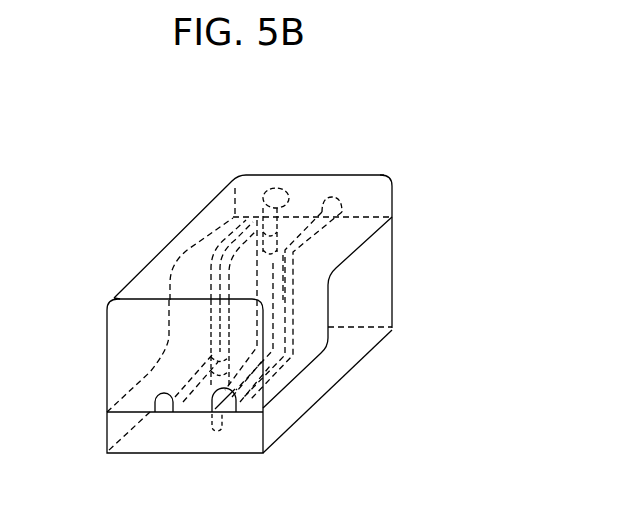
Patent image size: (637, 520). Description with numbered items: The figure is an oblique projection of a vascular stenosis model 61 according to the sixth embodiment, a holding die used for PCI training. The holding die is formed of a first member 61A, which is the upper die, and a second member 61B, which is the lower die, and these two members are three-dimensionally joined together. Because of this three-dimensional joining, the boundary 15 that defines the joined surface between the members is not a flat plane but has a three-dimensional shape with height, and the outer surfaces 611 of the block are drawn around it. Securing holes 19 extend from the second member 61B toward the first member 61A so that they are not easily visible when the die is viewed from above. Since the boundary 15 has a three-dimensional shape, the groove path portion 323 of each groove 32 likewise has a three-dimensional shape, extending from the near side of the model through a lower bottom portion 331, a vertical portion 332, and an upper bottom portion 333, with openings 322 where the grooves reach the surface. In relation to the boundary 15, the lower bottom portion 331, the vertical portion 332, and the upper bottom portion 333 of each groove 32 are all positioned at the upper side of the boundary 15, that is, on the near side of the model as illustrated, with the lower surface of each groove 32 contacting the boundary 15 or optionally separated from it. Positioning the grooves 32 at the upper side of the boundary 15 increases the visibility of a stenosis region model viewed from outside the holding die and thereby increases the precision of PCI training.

The boundary 15 is at (328, 313).
The securing hole 19 is at (270, 232).
The groove 32 is at (285, 172).
The vascular stenosis model 61 is at (148, 204).
The first member 61A is at (156, 267).
The second member 61B is at (380, 278).
The block surface 611 is at (112, 299).
The channel opening 322 is at (273, 195).
The groove path portion 323 is at (239, 238).
The lower bottom portion 331 is at (278, 367).
The vertical portion 332 is at (292, 310).
The upper bottom portion 333 is at (327, 231).